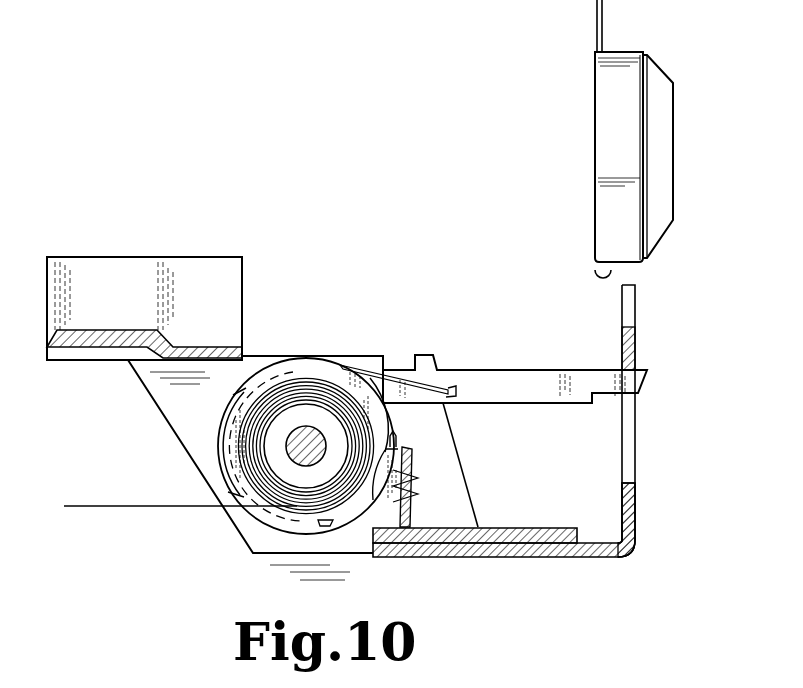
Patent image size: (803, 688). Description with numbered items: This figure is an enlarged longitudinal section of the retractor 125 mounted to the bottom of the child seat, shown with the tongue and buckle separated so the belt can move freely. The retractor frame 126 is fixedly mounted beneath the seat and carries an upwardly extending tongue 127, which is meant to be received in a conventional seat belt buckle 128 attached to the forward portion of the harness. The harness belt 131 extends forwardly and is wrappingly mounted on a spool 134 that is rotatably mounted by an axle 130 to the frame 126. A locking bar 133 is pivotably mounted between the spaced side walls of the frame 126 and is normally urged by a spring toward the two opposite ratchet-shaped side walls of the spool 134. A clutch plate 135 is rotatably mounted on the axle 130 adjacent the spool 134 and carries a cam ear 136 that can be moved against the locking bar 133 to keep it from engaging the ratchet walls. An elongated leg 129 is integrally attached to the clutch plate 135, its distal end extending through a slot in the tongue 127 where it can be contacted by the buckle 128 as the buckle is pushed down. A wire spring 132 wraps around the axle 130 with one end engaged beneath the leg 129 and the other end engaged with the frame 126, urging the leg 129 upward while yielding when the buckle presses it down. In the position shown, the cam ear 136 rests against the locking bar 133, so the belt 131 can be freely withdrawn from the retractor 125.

The retractor 125 is at (430, 303).
The retractor frame 126 is at (506, 558).
The tongue 127 is at (637, 494).
The seat belt buckle 128 is at (663, 236).
The elongated leg 129 is at (554, 404).
The axle 130 is at (305, 425).
The belt 131 is at (122, 505).
The wire spring 132 is at (440, 388).
The locking bar 133 is at (414, 456).
The spool 134 is at (231, 433).
The clutch plate 135 is at (343, 367).
The cam ear 136 is at (394, 440).